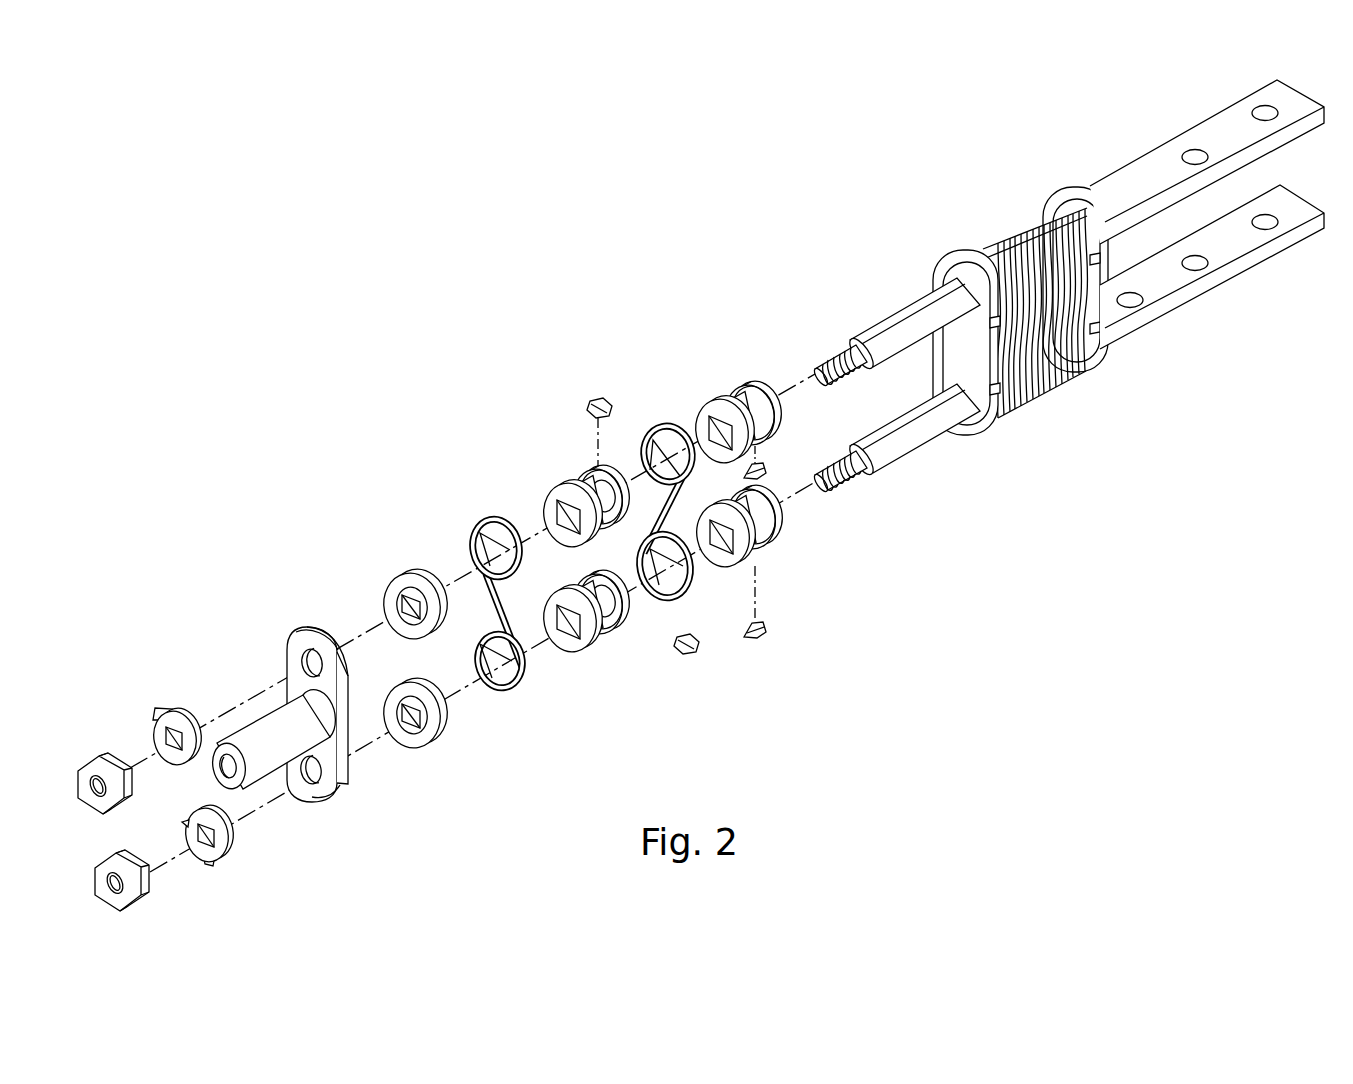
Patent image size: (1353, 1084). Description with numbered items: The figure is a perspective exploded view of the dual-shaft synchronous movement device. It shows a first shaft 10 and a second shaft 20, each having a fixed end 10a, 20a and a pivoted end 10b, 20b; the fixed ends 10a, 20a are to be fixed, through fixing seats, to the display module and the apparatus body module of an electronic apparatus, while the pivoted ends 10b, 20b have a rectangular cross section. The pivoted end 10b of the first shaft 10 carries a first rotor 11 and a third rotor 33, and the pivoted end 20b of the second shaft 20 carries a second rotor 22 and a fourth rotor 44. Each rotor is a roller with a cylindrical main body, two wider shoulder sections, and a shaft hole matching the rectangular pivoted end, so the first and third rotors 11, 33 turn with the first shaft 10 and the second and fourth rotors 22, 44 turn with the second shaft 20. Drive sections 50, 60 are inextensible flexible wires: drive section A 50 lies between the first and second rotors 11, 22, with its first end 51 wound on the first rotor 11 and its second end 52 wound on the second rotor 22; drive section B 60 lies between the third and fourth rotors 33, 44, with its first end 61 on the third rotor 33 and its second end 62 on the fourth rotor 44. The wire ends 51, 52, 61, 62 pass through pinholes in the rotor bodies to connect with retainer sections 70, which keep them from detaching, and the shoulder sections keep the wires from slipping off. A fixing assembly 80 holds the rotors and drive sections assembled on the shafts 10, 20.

The first shaft 10 is at (1086, 176).
The fixed end of the first shaft 10a is at (1148, 174).
The pivoted end of the first shaft 10b is at (906, 315).
The second shaft 20 is at (1068, 347).
The fixed end of the second shaft 20a is at (1185, 300).
The pivoted end of the second shaft 20b is at (930, 437).
The first rotor 11 is at (548, 478).
The second rotor 22 is at (622, 633).
The third rotor 33 is at (730, 383).
The fourth rotor 44 is at (770, 545).
The drive section A 50 is at (465, 577).
The first end of drive section A 51 is at (484, 528).
The second end of drive section A 52 is at (472, 670).
The drive section B 60 is at (683, 506).
The first end of drive section B 61 is at (664, 425).
The second end of drive section B 62 is at (665, 598).
The retainer section 70 is at (592, 397).
The fixing assembly 80 is at (276, 612).